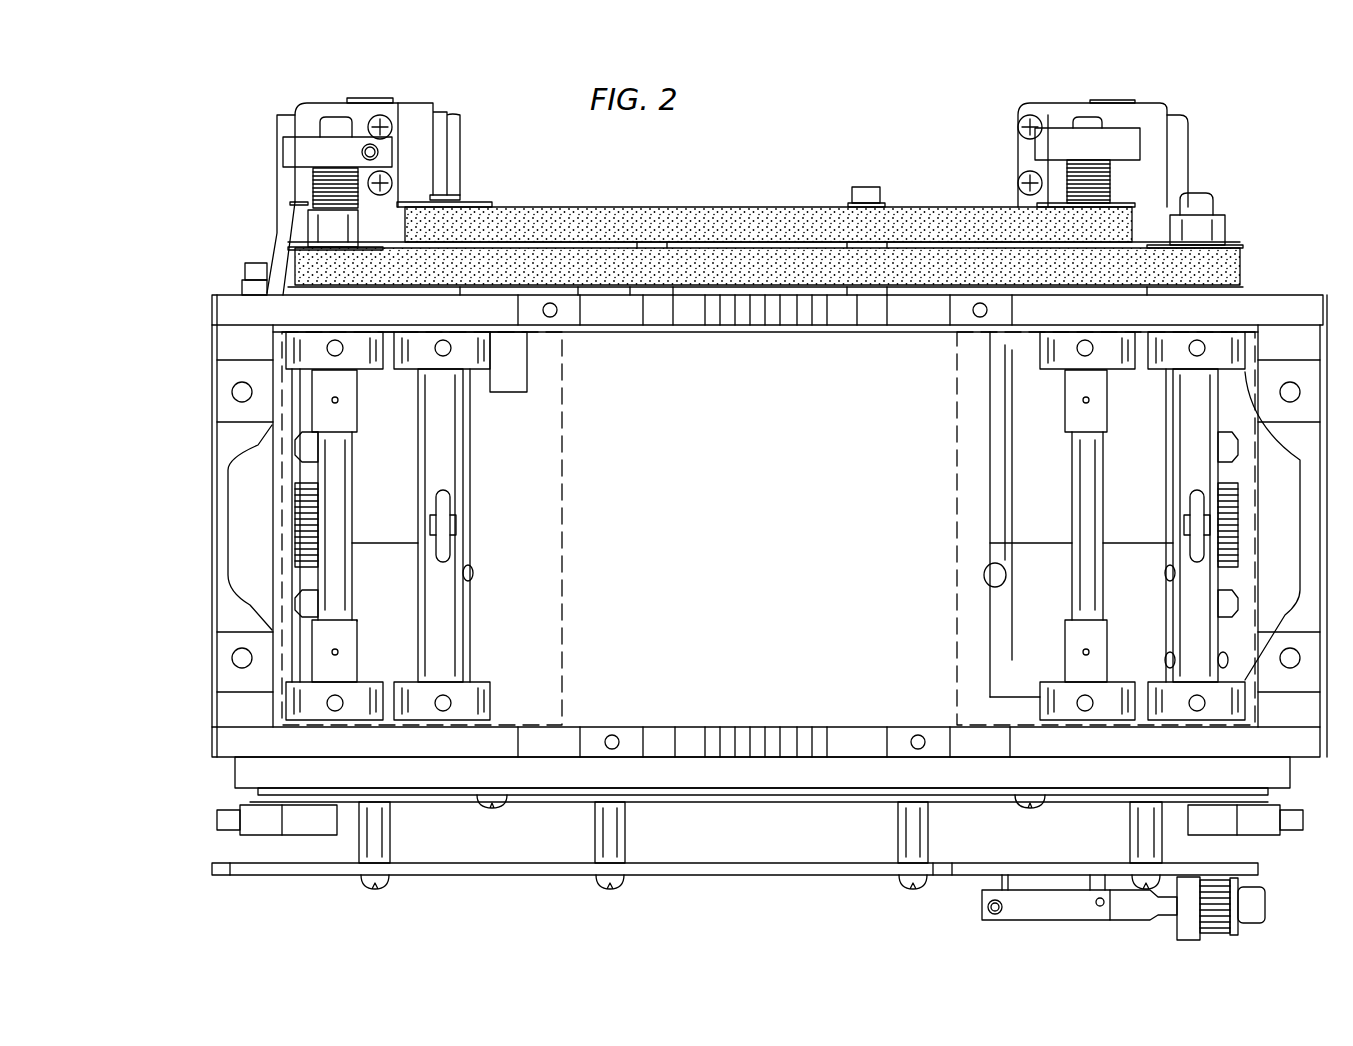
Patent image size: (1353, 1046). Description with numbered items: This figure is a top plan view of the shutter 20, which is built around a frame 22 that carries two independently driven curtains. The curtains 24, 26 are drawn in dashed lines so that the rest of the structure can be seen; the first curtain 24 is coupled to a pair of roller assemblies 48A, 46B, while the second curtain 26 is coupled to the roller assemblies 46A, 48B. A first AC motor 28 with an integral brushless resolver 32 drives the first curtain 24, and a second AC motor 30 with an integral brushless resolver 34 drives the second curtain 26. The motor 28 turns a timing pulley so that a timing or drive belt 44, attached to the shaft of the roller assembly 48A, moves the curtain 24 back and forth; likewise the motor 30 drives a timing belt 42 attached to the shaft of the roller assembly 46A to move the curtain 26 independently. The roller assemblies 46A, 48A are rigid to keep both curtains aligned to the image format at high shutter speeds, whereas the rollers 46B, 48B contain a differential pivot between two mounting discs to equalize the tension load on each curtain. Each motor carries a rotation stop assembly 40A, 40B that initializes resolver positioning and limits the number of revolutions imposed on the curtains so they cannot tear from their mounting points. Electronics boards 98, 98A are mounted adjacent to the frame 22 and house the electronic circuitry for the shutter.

The shutter 20 is at (222, 200).
The frame 22 is at (222, 757).
The curtain 24 is at (957, 492).
The curtain 26 is at (563, 522).
The first AC motor 28 is at (1055, 486).
The second AC motor 30 is at (400, 488).
The integral brushless resolver 32 is at (1057, 618).
The integral brushless resolver 34 is at (400, 604).
The rotation stop assembly 40A is at (418, 103).
The rotation stop assembly 40B is at (1150, 108).
The timing belt 42 is at (545, 265).
The timing or drive belt 44 is at (685, 220).
The roller assembly 46A is at (307, 348).
The roller assembly 46B is at (455, 408).
The roller assembly 48A is at (1052, 350).
The roller assembly 48B is at (1195, 472).
The electronics board 98 is at (268, 873).
The electronics board 98A is at (438, 805).